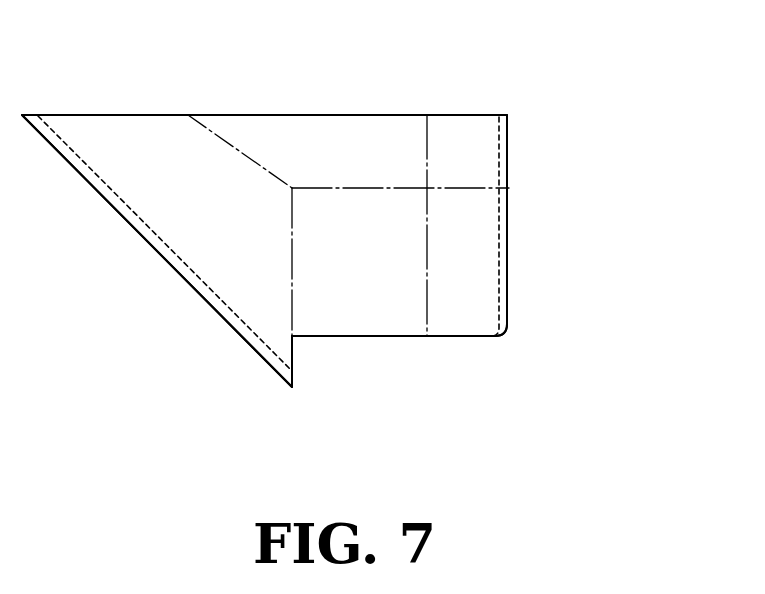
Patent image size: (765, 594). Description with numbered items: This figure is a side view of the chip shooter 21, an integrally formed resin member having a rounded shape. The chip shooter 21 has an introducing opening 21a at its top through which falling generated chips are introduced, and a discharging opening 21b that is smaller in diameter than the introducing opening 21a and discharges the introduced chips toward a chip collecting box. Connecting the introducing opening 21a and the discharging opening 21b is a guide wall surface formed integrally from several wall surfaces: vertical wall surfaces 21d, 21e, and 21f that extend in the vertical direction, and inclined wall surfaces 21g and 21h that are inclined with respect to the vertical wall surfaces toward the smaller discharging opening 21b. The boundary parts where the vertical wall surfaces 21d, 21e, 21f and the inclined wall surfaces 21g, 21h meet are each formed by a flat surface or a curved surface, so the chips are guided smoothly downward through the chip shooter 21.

The chip shooter 21 is at (528, 85).
The introducing opening 21a is at (352, 115).
The discharging opening 21b is at (352, 338).
The vertical wall surface 21d is at (494, 263).
The vertical wall surface 21e is at (278, 128).
The vertical wall surface 21f is at (468, 130).
The inclined wall surface 21g is at (192, 282).
The inclined wall surface 21h is at (400, 316).